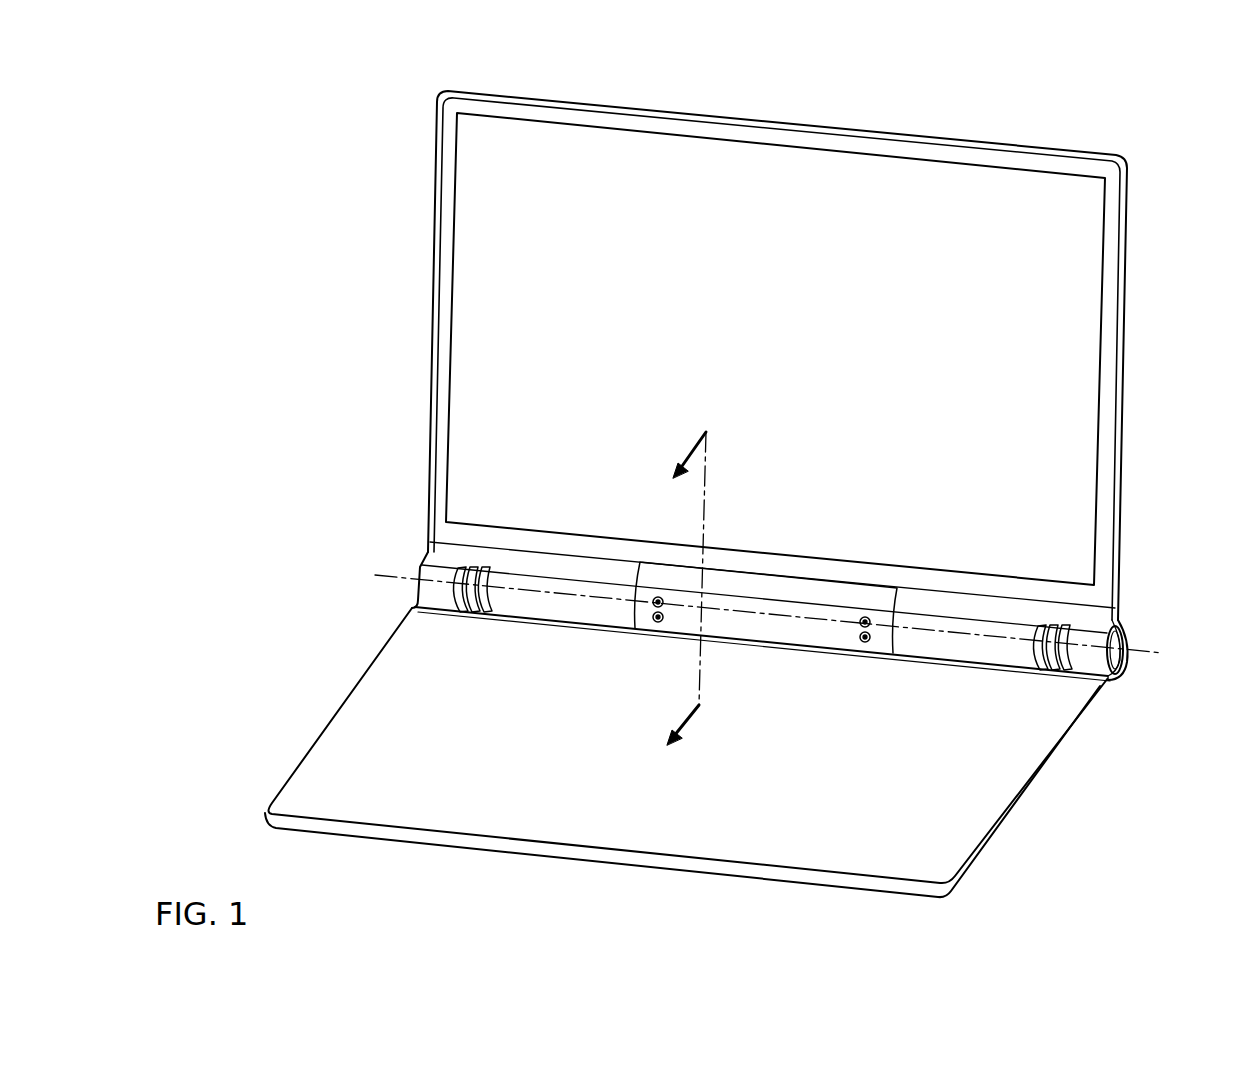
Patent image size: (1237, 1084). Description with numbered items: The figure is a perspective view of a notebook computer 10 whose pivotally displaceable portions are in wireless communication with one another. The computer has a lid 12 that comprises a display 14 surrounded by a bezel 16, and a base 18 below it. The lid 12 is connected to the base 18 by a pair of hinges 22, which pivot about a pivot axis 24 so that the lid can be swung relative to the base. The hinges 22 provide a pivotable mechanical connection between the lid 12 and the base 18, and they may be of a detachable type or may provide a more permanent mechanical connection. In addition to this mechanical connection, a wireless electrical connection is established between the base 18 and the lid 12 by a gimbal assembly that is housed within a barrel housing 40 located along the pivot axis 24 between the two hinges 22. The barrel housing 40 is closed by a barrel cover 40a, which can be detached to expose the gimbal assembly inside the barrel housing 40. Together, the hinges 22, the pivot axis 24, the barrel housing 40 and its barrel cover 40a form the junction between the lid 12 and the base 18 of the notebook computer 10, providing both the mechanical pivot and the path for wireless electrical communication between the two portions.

The notebook computer 10 is at (333, 609).
The lid 12 is at (1145, 262).
The display 14 is at (787, 368).
The bezel 16 is at (912, 150).
The base 18 is at (958, 845).
The hinges 22 is at (462, 605).
The pivot axis 24 is at (1143, 651).
The barrel housing 40 is at (572, 612).
The barrel cover 40a is at (752, 630).